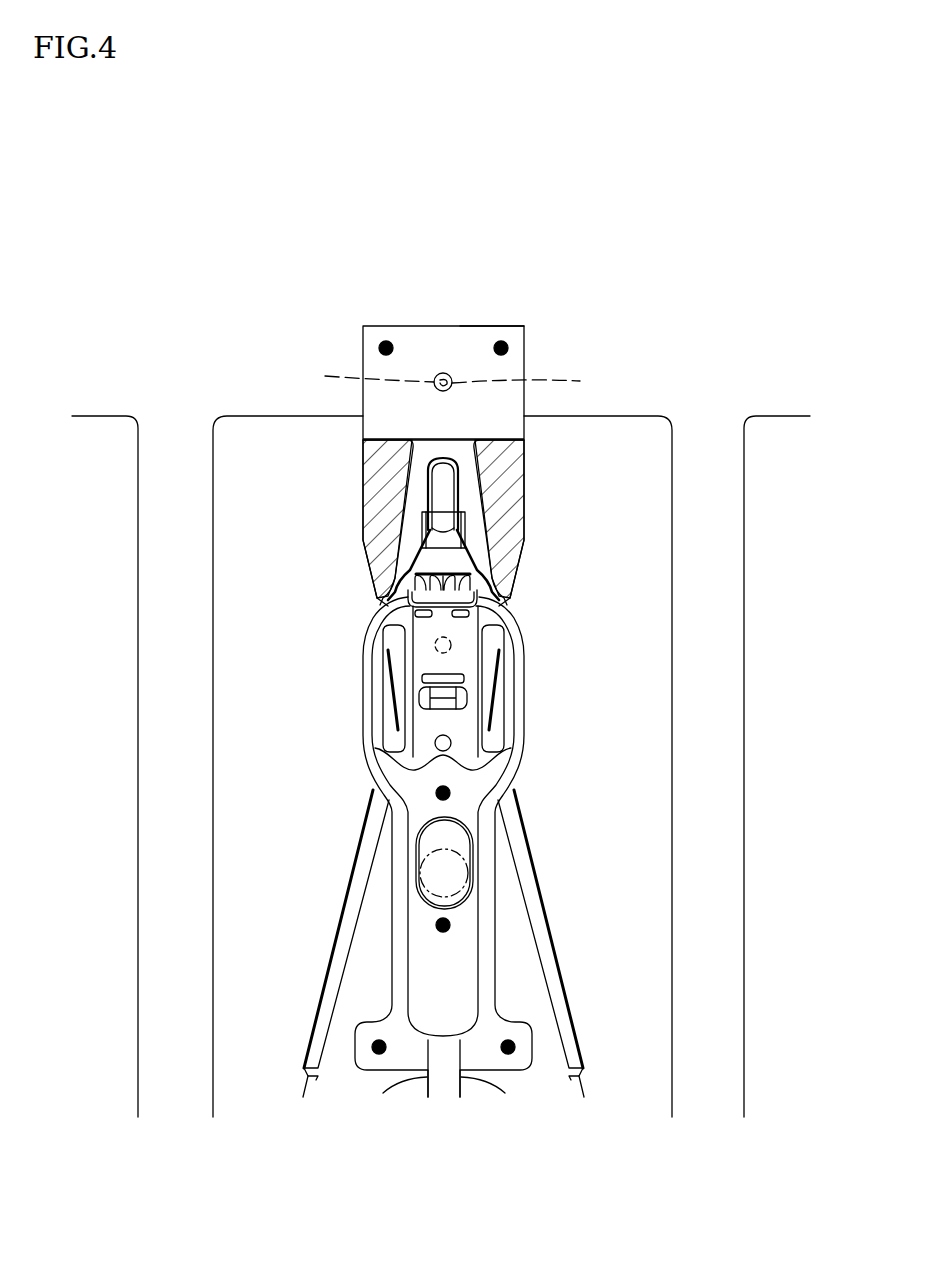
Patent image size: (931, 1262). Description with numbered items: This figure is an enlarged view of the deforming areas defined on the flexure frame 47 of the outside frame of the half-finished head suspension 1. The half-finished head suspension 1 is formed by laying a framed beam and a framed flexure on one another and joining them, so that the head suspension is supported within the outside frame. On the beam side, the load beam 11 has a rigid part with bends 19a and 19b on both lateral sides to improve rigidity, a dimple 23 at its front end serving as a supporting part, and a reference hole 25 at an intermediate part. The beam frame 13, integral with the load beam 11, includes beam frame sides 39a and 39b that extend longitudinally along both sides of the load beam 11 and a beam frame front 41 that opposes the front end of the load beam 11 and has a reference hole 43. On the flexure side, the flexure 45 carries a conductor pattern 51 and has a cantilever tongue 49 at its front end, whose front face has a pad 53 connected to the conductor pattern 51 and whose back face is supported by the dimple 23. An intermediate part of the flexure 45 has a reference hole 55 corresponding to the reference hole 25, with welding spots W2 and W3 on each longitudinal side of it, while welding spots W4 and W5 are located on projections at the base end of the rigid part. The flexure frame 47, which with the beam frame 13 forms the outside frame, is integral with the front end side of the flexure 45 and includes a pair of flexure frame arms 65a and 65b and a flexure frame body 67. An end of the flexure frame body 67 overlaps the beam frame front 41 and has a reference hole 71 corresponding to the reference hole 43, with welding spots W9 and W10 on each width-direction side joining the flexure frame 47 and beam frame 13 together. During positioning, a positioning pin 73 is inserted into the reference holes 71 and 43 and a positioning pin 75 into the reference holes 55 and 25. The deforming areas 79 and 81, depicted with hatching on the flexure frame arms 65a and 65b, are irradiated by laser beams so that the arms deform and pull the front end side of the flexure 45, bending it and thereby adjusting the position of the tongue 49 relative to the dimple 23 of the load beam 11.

The half-finished head suspension 1 is at (692, 294).
The load beam 11 is at (455, 943).
The beam frame 13 is at (746, 901).
The bend 19a is at (330, 932).
The bend 19b is at (565, 1005).
The dimple 23 is at (452, 647).
The reference hole 25 is at (465, 835).
The beam frame side 39a is at (138, 736).
The beam frame side 39b is at (730, 736).
The beam frame front 41 is at (249, 335).
The reference hole 43 is at (441, 373).
The flexure 45 is at (522, 642).
The flexure frame 47 is at (454, 523).
The tongue 49 is at (398, 640).
The conductor pattern 51 is at (380, 762).
The pad 53 is at (505, 584).
The reference hole 55 is at (440, 838).
The flexure frame arm 65a is at (363, 545).
The flexure frame arm 65b is at (518, 562).
The flexure frame body 67 is at (474, 338).
The reference hole 71 is at (533, 383).
The positioning pin 73 is at (365, 379).
The positioning pin 75 is at (443, 872).
The deforming area 79 is at (378, 492).
The deforming area 81 is at (517, 510).
The welding spot W2 is at (451, 794).
The welding spot W3 is at (451, 925).
The welding spot W4 is at (372, 1047).
The welding spot W5 is at (515, 1047).
The welding spot W9 is at (386, 341).
The welding spot W10 is at (502, 341).